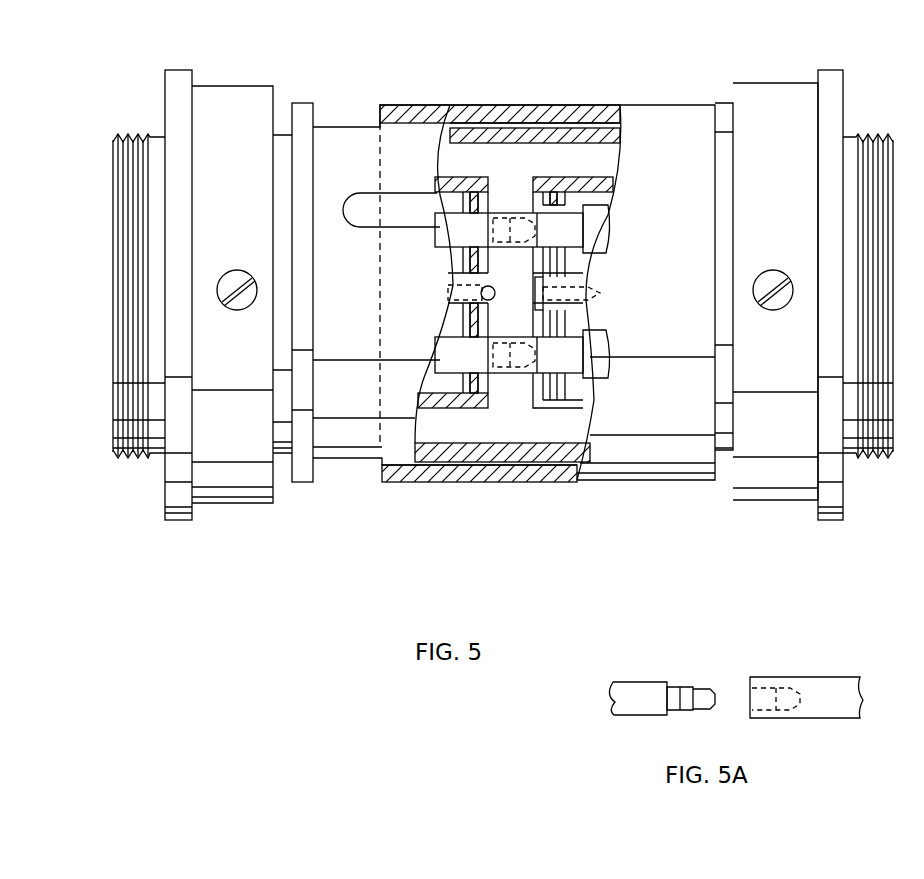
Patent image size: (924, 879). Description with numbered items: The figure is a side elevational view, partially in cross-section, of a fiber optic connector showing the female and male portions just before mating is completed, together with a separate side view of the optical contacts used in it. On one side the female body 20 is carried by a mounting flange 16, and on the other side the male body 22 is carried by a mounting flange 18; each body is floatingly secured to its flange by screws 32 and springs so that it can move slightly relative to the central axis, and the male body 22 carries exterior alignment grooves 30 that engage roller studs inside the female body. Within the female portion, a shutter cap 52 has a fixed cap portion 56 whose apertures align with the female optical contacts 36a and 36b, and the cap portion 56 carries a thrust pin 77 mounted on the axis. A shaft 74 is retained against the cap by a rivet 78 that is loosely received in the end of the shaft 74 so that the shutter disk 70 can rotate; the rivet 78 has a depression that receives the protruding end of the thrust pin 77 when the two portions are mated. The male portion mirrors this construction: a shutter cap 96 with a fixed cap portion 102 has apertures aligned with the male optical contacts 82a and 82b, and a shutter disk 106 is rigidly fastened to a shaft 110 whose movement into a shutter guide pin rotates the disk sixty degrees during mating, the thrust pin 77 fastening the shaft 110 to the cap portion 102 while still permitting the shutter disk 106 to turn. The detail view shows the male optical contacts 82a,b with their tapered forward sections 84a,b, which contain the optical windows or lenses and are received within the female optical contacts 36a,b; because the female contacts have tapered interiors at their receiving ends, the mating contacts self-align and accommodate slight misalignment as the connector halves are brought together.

In FIG. 5, the mounting flange 16 is at (795, 88).
In FIG. 5, the mounting flange 18 is at (241, 100).
In FIG. 5, the female body 20 is at (500, 483).
In FIG. 5, the male body 22 is at (345, 462).
In FIG. 5, the alignment grooves 30 is at (376, 205).
In FIG. 5, the screws 32 is at (776, 275).
In FIG. 5, the optical contact 36a is at (585, 200).
In FIG. 5, the optical contact 36b is at (575, 346).
In FIG. 5, the shutter cap 52 is at (594, 155).
In FIG. 5, the fixed cap portion 56 is at (533, 203).
In FIG. 5, the shutter disk 70 is at (578, 190).
In FIG. 5, the shaft 74 is at (613, 272).
In FIG. 5, the thrust pin 77 is at (503, 296).
In FIG. 5, the rivet 78 is at (535, 340).
In FIG. 5, the male optical contact 82a is at (457, 224).
In FIG. 5, the male optical contact 82b is at (455, 350).
In FIG. 5, the shutter cap 96 is at (461, 165).
In FIG. 5, the fixed cap portion 102 is at (495, 178).
In FIG. 5, the shutter disk 106 is at (447, 392).
In FIG. 5, the shaft 110 is at (445, 273).
In FIG. 5A, the male optical contacts 82a,b is at (625, 700).
In FIG. 5A, the tapered forward sections 84a,b is at (700, 690).
In FIG. 5A, the female optical contacts 36a,b is at (832, 682).